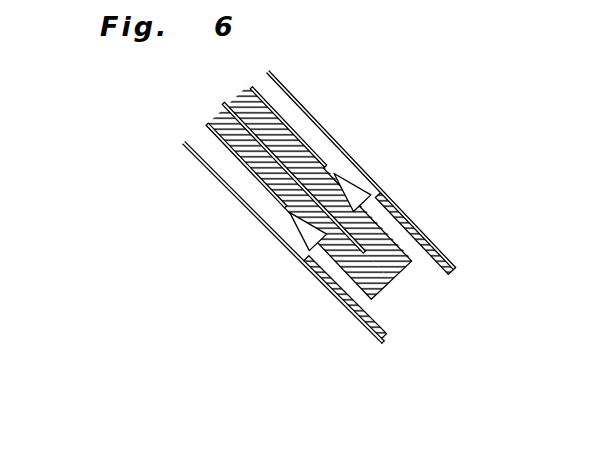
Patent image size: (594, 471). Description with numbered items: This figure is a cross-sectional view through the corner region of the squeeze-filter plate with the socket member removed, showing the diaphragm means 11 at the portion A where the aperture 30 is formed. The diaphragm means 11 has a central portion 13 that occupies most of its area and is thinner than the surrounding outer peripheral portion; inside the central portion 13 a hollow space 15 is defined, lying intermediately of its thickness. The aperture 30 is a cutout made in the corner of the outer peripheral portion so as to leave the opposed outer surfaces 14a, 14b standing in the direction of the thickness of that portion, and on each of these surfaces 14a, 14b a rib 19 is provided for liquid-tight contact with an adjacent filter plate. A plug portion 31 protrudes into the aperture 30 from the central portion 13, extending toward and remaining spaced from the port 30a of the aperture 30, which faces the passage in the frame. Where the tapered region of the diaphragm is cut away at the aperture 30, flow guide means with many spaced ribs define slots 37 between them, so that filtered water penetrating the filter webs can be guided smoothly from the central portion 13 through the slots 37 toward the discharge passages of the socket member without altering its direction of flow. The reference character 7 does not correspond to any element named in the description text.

The plate 7 is at (303, 142).
The diaphragm means 11 is at (192, 148).
The central portion 13 is at (248, 160).
The opposed outer surface 14a is at (452, 264).
The opposed outer surface 14b is at (378, 344).
The hollow space 15 is at (243, 112).
The rib 19 is at (440, 240).
The aperture 30 is at (423, 291).
The port 30a is at (386, 340).
The plug portion 31 is at (383, 253).
The slot 37 is at (353, 190).
The portion A is at (413, 204).